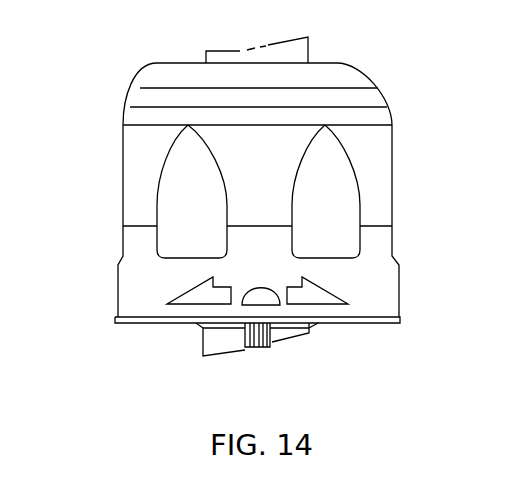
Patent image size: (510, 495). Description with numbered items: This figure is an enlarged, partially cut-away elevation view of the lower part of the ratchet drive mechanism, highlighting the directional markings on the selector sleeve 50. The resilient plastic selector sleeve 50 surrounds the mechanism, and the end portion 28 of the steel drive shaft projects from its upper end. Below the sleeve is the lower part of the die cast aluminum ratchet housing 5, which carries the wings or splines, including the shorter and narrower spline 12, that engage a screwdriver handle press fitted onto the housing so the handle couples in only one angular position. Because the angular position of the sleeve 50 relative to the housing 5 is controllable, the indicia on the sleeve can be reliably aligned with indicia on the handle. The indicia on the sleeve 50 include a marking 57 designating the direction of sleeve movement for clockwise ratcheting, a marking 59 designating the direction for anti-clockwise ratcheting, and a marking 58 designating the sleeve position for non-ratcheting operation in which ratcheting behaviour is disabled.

The selector sleeve 50 is at (368, 73).
The end portion 28 is at (206, 53).
The marking 57 is at (205, 293).
The marking 59 is at (310, 295).
The marking 58 is at (262, 292).
The ratchet housing 5 is at (198, 341).
The spline 12 is at (259, 349).